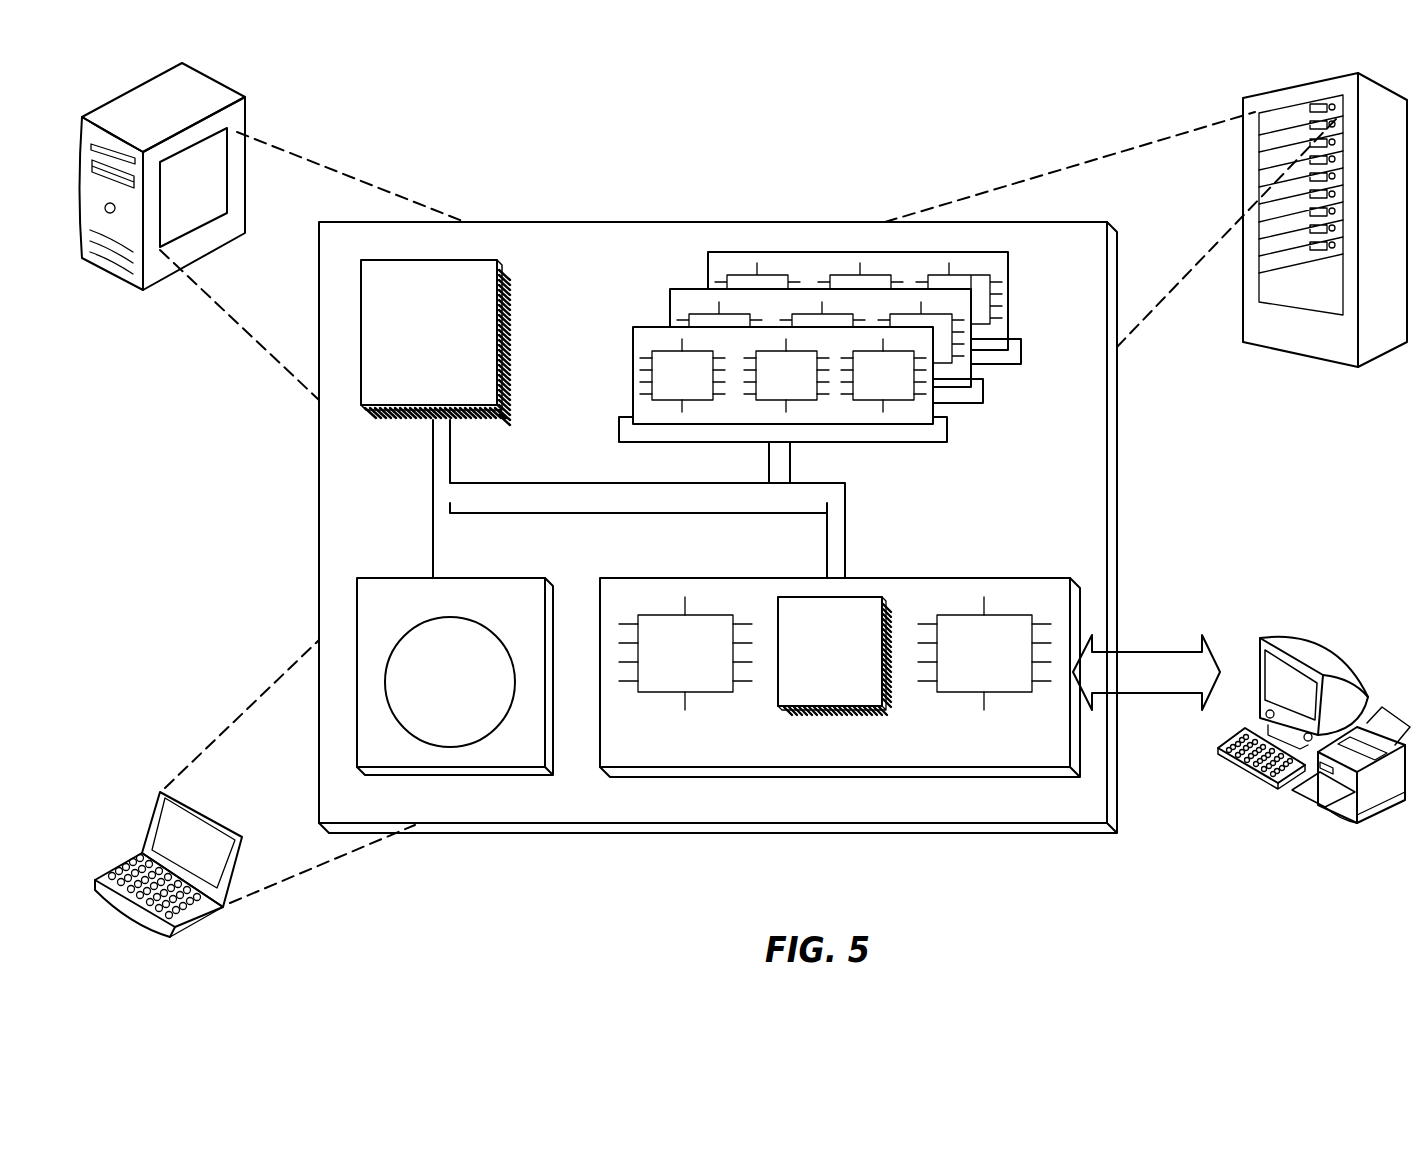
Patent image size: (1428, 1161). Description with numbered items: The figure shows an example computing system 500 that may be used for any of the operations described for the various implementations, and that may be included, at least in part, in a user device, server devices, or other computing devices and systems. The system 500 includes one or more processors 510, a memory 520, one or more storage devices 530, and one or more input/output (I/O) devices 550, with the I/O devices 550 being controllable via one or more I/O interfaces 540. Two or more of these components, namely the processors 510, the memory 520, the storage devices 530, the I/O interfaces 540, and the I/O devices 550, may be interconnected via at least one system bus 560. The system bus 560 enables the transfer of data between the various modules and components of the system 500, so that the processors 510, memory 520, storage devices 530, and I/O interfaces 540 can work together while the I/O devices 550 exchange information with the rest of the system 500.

The computing system 500 is at (501, 109).
The processor 510 is at (486, 397).
The memory 520 is at (968, 413).
The storage device 530 is at (533, 762).
The I/O interface 540 is at (957, 760).
The input/output device 550 is at (1290, 638).
The system bus 560 is at (628, 498).